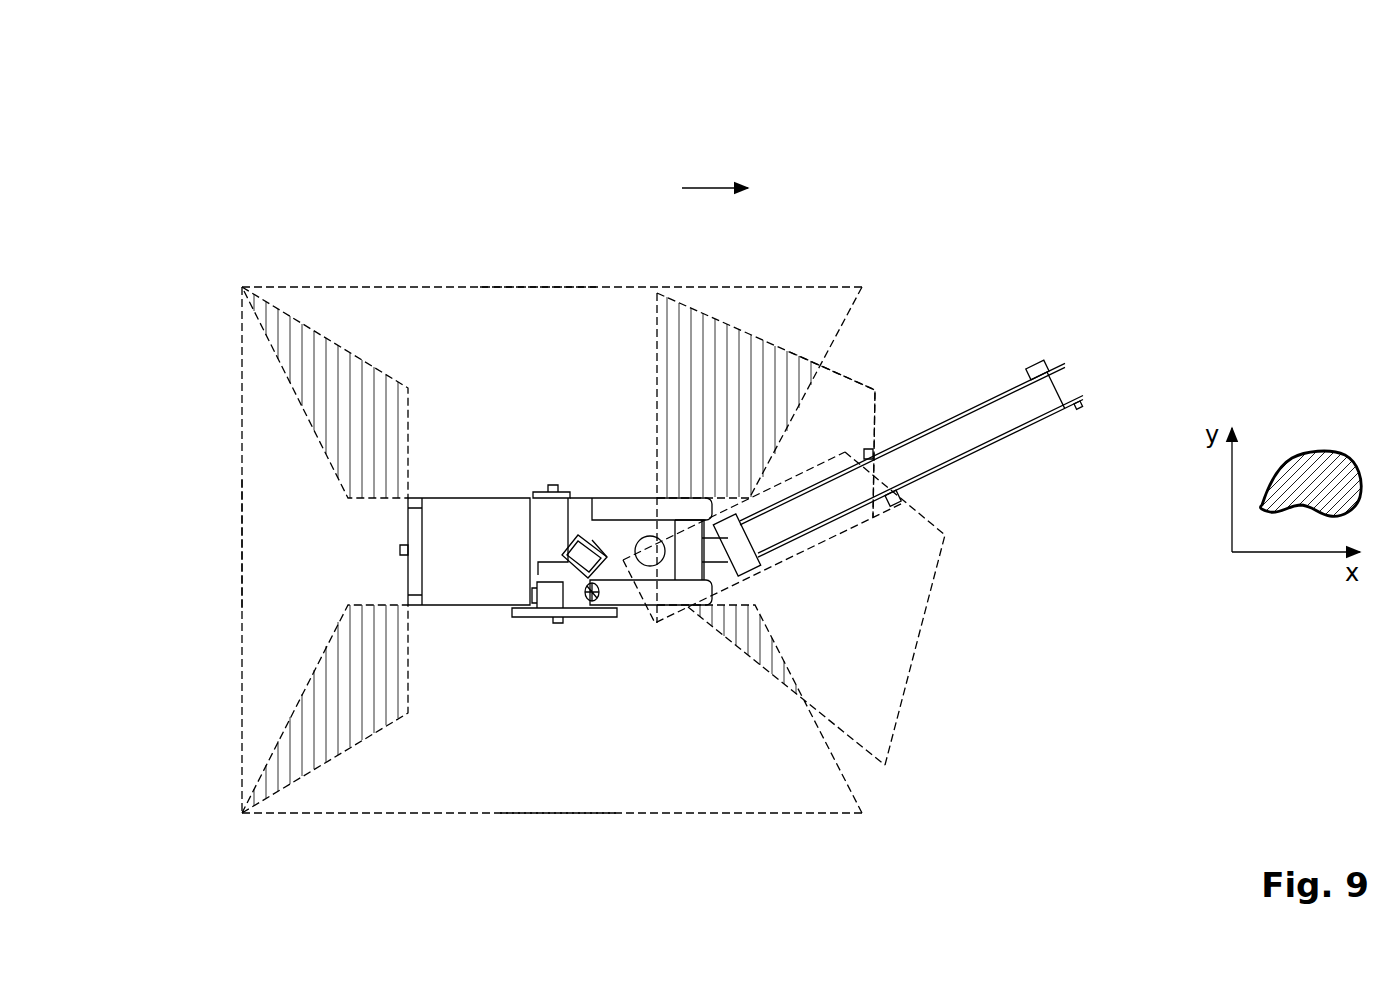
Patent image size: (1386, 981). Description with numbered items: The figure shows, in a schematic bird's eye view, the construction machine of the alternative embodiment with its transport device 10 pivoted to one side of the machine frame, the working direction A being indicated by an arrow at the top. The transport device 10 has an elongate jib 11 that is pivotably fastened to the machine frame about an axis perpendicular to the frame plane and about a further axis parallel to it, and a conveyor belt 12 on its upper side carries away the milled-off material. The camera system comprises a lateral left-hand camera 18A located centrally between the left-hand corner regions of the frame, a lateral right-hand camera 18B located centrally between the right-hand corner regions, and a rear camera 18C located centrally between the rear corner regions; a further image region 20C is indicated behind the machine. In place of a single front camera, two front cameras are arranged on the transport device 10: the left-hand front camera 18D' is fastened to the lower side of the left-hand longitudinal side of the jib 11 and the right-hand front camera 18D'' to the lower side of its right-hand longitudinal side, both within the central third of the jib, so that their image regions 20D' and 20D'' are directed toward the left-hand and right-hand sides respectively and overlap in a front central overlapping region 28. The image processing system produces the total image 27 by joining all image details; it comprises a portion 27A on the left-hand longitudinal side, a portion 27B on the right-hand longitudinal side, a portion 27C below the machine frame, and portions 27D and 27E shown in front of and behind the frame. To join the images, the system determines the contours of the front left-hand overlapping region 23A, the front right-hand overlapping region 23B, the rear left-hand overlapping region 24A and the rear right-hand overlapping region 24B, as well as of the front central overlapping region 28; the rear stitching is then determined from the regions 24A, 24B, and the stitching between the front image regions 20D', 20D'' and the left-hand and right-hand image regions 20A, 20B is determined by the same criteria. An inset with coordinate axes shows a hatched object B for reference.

The transport device 10 is at (1012, 350).
The jib 11 is at (1036, 428).
The conveyor belt 12 is at (990, 417).
The lateral left-hand camera 18A is at (550, 485).
The lateral right-hand camera 18B is at (558, 627).
The rear camera 18C is at (400, 549).
The left-hand front camera 18D' is at (899, 414).
The right-hand front camera 18D'' is at (953, 504).
The left-hand image region 20A is at (520, 310).
The right-hand image region 20B is at (547, 793).
The boundary of sensing region 20C is at (262, 549).
The image region of the front left-hand camera 20D' is at (854, 409).
The image region of the front right-hand camera 20D'' is at (819, 608).
The front left-hand overlapping region 23A is at (737, 355).
The front right-hand overlapping region 23B is at (743, 633).
The rear left-hand overlapping region 24A is at (308, 342).
The rear right-hand overlapping region 24B is at (308, 753).
The total image 27 is at (447, 262).
The portion of the total image on the left-hand longitudinal side 27A is at (440, 448).
The portion of the total image on the right-hand longitudinal side 27B is at (453, 692).
The portion of the total image below the machine frame 27C is at (695, 553).
The monitored sub-area 27D is at (823, 622).
The monitored sub-area 27E is at (265, 606).
The front central overlapping region 28 is at (798, 513).
The working direction A is at (705, 188).
The object B is at (1325, 467).